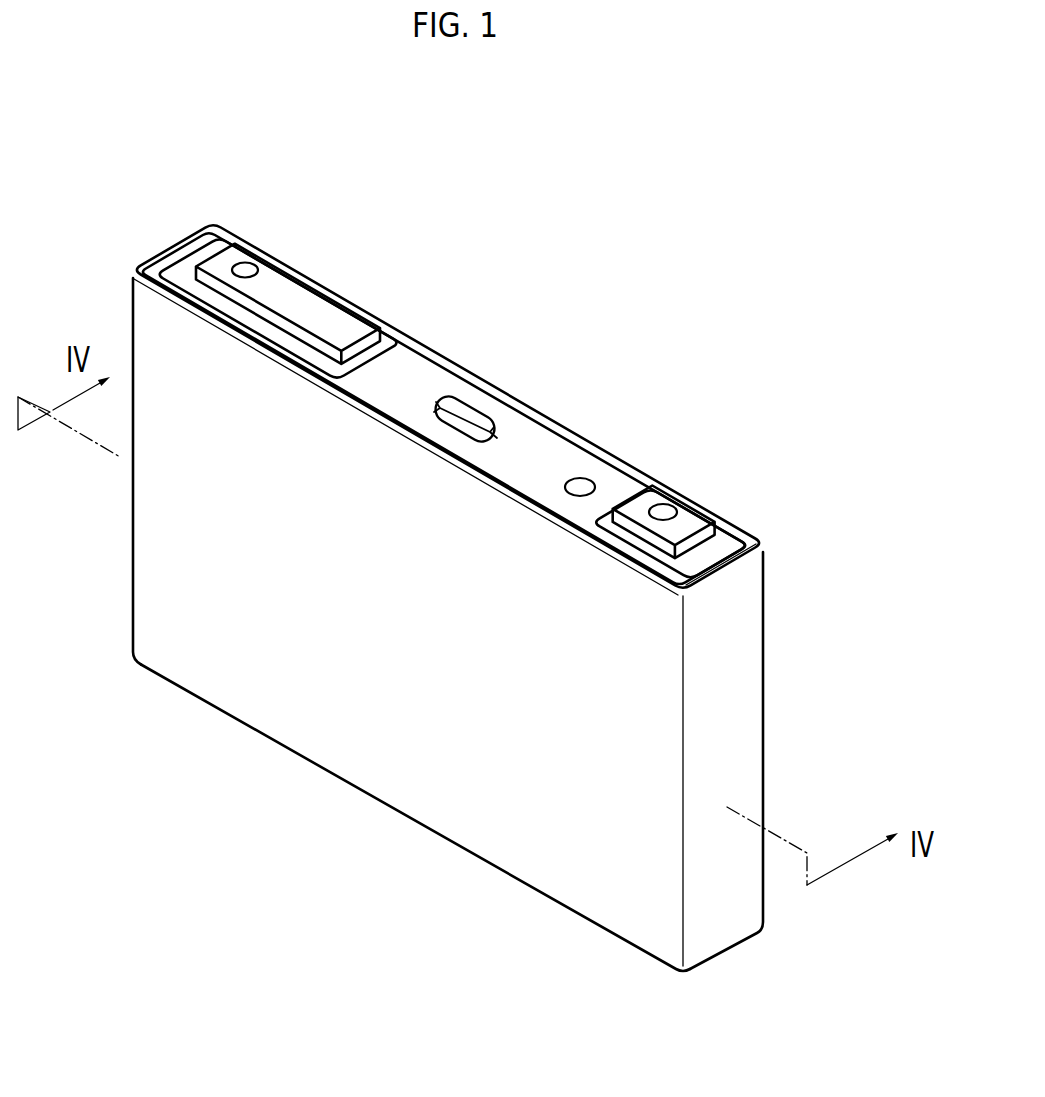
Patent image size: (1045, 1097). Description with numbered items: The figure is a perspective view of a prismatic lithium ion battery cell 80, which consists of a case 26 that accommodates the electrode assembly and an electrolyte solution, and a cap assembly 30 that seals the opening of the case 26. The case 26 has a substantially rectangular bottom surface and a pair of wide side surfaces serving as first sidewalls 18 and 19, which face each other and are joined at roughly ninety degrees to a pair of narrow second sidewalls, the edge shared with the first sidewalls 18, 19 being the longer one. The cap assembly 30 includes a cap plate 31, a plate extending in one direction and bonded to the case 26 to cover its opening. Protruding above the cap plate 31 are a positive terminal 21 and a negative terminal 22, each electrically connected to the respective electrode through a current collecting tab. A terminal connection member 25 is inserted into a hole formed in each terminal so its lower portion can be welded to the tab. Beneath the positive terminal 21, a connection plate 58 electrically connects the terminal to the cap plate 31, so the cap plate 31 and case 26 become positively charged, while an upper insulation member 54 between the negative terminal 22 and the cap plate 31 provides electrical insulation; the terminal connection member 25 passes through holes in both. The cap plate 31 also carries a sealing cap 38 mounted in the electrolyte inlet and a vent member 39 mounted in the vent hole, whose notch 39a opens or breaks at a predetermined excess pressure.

The battery cell 80 is at (517, 143).
The first sidewall 18 is at (254, 697).
The case 26 is at (368, 768).
The first sidewall 19 is at (765, 627).
The cap assembly 30 is at (557, 423).
The cap plate 31 is at (416, 368).
The upper insulation member 54 is at (195, 280).
The connection plate 58 is at (728, 510).
The negative terminal 22 is at (313, 300).
The positive terminal 21 is at (688, 514).
The terminal connection member 25 is at (246, 268).
The sealing cap 38 is at (586, 476).
The vent member 39 is at (463, 400).
The notch 39a is at (476, 416).